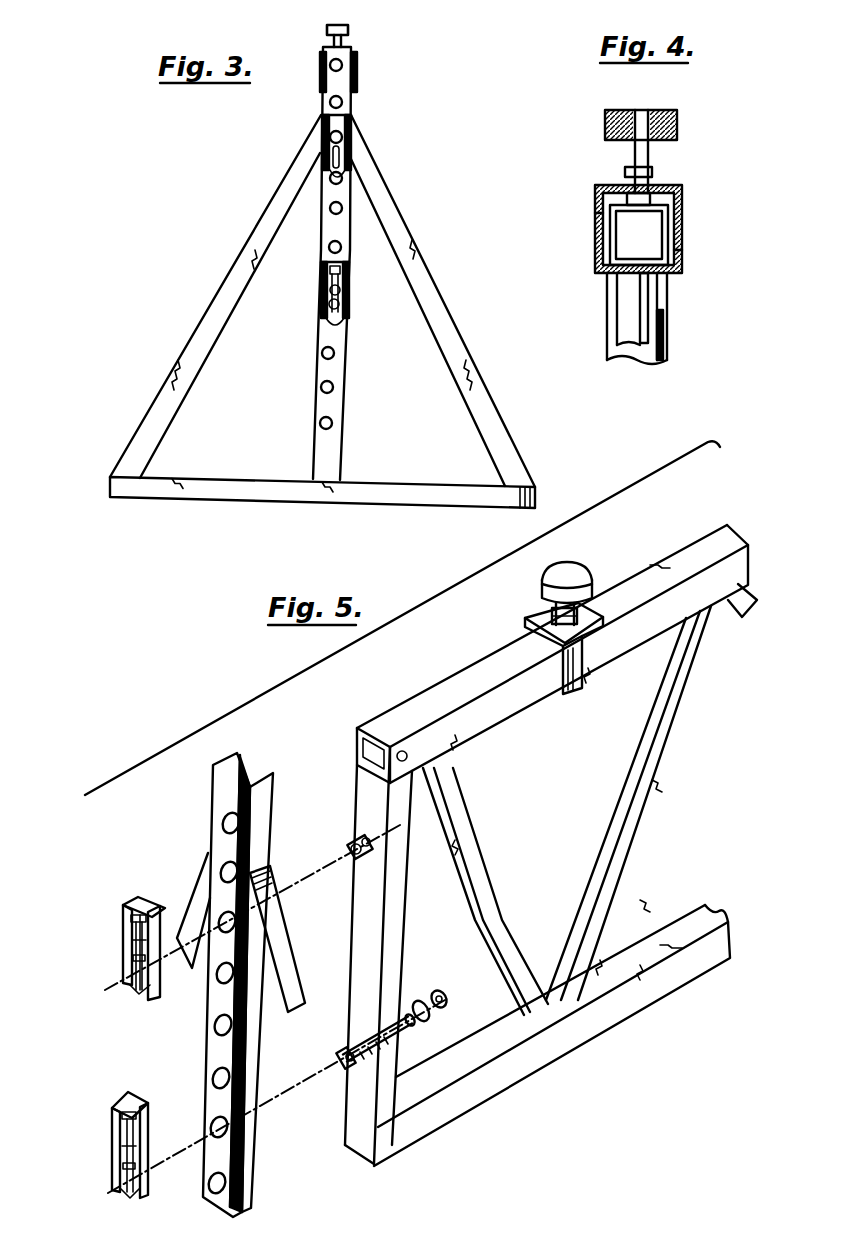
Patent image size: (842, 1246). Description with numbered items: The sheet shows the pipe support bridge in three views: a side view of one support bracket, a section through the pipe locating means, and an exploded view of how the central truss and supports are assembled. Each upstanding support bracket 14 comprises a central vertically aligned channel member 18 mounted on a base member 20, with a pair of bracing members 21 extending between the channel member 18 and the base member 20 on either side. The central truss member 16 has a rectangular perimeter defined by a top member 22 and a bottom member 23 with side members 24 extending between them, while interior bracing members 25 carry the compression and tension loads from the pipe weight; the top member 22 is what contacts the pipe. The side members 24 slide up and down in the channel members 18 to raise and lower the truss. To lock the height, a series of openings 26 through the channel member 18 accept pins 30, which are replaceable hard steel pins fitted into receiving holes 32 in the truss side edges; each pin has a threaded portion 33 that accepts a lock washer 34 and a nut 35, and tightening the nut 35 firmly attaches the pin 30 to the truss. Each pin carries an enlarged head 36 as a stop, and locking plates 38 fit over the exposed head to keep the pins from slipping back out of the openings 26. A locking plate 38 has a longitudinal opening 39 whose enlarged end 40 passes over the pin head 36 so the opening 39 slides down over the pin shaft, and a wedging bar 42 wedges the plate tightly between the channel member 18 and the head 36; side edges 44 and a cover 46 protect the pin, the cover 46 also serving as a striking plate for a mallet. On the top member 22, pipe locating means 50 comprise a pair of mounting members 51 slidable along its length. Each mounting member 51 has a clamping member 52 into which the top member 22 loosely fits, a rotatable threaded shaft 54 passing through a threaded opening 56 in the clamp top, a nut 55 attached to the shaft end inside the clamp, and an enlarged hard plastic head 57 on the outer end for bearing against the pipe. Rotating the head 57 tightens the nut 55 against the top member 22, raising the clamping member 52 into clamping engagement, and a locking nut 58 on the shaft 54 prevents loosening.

In FIG. 3, the support bracket 14 is at (402, 167).
In FIG. 5, the support bracket 14 is at (262, 777).
In FIG. 5, the central truss member 16 is at (452, 652).
In FIG. 5, the channel member 18 is at (212, 790).
In FIG. 3, the base member 20 is at (390, 480).
In FIG. 3, the bracing members 21 is at (208, 320).
In FIG. 5, the bracing members 21 is at (200, 893).
In FIG. 4, the top member 22 is at (668, 240).
In FIG. 5, the top member 22 is at (688, 553).
In FIG. 5, the bottom member 23 is at (640, 997).
In FIG. 4, the side members 24 is at (668, 327).
In FIG. 5, the side members 24 is at (412, 920).
In FIG. 4, the bracing members 25 is at (628, 312).
In FIG. 5, the bracing members 25 is at (650, 778).
In FIG. 3, the openings 26 is at (336, 354).
In FIG. 5, the openings 26 is at (212, 1078).
In FIG. 5, the pins 30 is at (350, 848).
In FIG. 5, the receiving holes 32 is at (355, 836).
In FIG. 5, the threaded portion 33 is at (412, 1026).
In FIG. 5, the lock washer 34 is at (421, 1002).
In FIG. 5, the nut 35 is at (447, 1000).
In FIG. 3, the enlarged head 36 is at (322, 138).
In FIG. 5, the enlarged head 36 is at (352, 858).
In FIG. 3, the locking plates 38 is at (318, 305).
In FIG. 5, the locking plates 38 is at (125, 940).
In FIG. 3, the longitudinal opening 39 is at (321, 289).
In FIG. 5, the longitudinal opening 39 is at (125, 956).
In FIG. 3, the end of the opening 40 is at (347, 306).
In FIG. 5, the end of the opening 40 is at (148, 984).
In FIG. 5, the wedging bar 42 is at (146, 897).
In FIG. 3, the side edges 44 is at (321, 271).
In FIG. 5, the side edges 44 is at (125, 920).
In FIG. 3, the cover 46 is at (328, 248).
In FIG. 5, the cover 46 is at (130, 905).
In FIG. 4, the pipe locating means 50 is at (576, 187).
In FIG. 5, the pipe locating means 50 is at (522, 602).
In FIG. 3, the mounting members 51 is at (362, 80).
In FIG. 4, the mounting members 51 is at (684, 202).
In FIG. 5, the mounting members 51 is at (589, 698).
In FIG. 4, the clamping member 52 is at (682, 256).
In FIG. 5, the clamping member 52 is at (596, 651).
In FIG. 4, the threaded shaft 54 is at (634, 158).
In FIG. 4, the nut 55 is at (600, 213).
In FIG. 4, the threaded opening 56 is at (626, 186).
In FIG. 3, the enlarged head 57 is at (350, 32).
In FIG. 4, the enlarged head 57 is at (678, 126).
In FIG. 5, the enlarged head 57 is at (553, 567).
In FIG. 4, the locking nut 58 is at (654, 178).